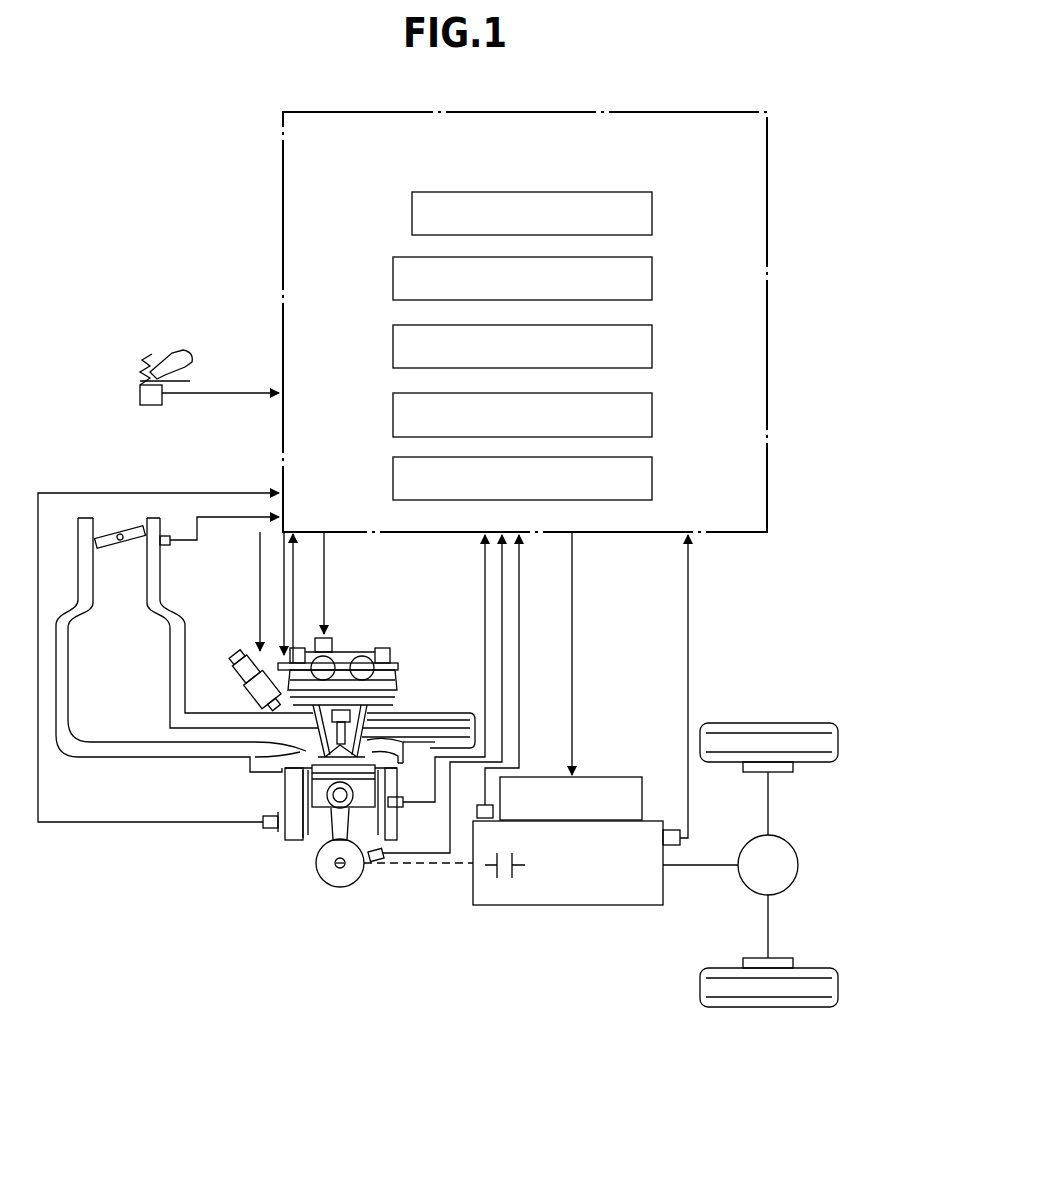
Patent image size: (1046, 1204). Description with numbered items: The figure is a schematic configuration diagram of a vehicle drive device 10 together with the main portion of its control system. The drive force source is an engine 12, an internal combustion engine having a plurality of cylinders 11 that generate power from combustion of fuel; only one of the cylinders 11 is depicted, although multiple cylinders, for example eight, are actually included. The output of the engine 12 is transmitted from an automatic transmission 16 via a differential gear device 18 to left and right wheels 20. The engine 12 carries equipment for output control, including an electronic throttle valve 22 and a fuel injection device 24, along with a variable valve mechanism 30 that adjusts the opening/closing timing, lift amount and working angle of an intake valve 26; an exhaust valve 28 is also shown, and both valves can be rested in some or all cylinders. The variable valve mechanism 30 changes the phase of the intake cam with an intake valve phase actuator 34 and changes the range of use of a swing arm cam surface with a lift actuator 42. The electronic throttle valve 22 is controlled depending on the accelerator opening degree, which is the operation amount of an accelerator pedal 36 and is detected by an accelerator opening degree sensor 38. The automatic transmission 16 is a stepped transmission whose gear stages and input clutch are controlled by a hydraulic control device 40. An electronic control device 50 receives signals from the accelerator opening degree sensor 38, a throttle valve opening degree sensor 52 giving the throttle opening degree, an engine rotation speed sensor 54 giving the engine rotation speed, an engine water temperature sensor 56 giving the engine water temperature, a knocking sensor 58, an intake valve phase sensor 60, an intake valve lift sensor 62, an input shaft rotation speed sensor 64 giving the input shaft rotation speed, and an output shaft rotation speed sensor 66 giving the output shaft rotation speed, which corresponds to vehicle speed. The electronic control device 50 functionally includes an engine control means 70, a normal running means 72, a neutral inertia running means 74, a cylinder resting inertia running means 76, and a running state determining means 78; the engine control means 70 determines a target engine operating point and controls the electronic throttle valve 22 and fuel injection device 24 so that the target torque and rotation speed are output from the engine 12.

The vehicle drive device 10 is at (168, 150).
The cylinders 11 is at (297, 790).
The engine 12 is at (294, 864).
The automatic transmission 16 is at (608, 893).
The differential gear device 18 is at (779, 851).
The wheels 20 is at (782, 732).
The electronic throttle valve 22 is at (97, 533).
The fuel injection device 24 is at (240, 690).
The intake valve 26 is at (300, 749).
The exhaust valve 28 is at (396, 763).
The variable valve mechanism 30 is at (360, 620).
The intake valve phase actuator 34 is at (270, 660).
The accelerator pedal 36 is at (140, 366).
The accelerator opening degree sensor 38 is at (152, 405).
The hydraulic control device 40 is at (618, 778).
The lift actuator 42 is at (334, 660).
The electronic control device 50 is at (705, 112).
The throttle valve opening degree sensor 52 is at (167, 547).
The engine rotation speed sensor 54 is at (380, 862).
The engine water temperature sensor 56 is at (403, 803).
The knocking sensor 58 is at (272, 829).
The intake valve phase sensor 60 is at (297, 648).
The intake valve lift sensor 62 is at (327, 636).
The input shaft rotation speed sensor 64 is at (478, 813).
The output shaft rotation speed sensor 66 is at (680, 846).
The engine control means 70 is at (630, 202).
The normal running means 72 is at (630, 268).
The neutral inertia running means 74 is at (627, 335).
The cylinder resting inertia running means 76 is at (642, 402).
The running state determining means 78 is at (627, 465).